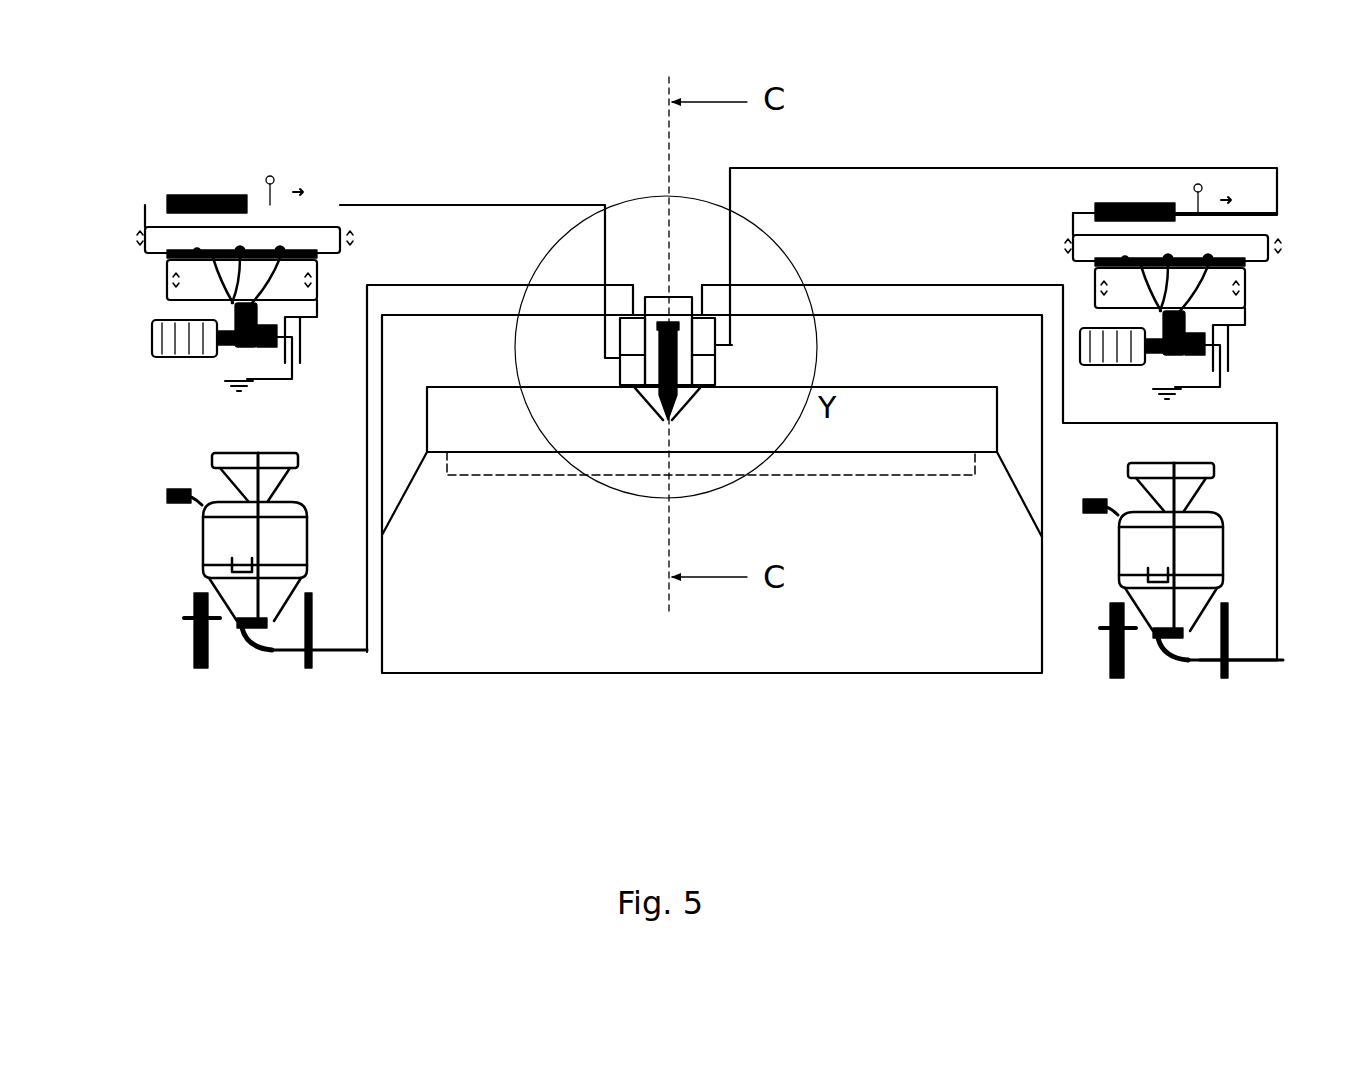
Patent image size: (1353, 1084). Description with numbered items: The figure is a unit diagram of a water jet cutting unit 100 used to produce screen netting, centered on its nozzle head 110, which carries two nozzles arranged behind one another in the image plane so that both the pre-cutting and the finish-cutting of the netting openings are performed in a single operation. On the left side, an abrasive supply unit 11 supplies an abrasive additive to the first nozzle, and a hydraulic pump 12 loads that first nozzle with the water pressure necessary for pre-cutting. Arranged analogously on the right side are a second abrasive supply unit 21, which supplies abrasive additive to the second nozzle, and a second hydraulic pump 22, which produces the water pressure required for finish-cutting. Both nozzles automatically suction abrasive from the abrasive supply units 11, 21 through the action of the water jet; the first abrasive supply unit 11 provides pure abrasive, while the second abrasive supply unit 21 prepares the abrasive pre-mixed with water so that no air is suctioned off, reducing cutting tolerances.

The water jet cutting unit 100 is at (455, 690).
The nozzle head 110 is at (693, 373).
The abrasive supply unit 11 is at (220, 542).
The hydraulic pump 12 is at (152, 358).
The second abrasive supply unit 21 is at (1200, 570).
The second hydraulic pump 22 is at (1140, 357).